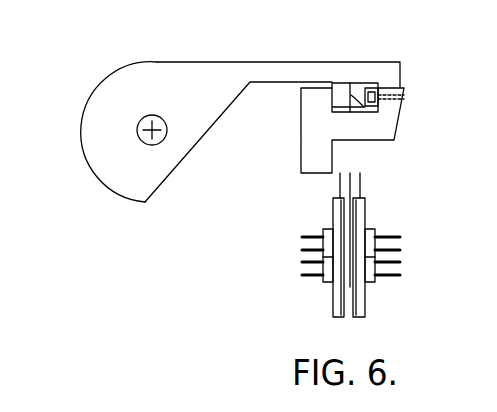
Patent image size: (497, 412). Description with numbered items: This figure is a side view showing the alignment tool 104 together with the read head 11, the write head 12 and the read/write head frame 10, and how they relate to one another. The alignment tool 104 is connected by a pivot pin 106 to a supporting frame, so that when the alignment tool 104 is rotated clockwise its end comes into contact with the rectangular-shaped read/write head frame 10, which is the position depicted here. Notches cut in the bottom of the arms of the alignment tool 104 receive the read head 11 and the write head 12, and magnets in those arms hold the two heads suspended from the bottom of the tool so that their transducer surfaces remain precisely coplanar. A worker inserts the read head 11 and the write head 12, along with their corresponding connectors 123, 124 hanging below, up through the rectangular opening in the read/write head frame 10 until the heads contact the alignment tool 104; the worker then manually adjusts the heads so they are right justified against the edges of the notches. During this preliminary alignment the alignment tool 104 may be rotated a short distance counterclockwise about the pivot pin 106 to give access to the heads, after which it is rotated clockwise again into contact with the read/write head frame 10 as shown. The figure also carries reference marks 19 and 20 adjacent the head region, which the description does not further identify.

The read/write head frame 10 is at (404, 88).
The read head 11 is at (338, 90).
The write head 12 is at (362, 88).
The bolt 19 is at (404, 97).
The lead wire 20 is at (351, 95).
The alignment tool 104 is at (192, 82).
The pivot pin 106 is at (137, 137).
The connector 123 is at (333, 212).
The connector 124 is at (365, 214).